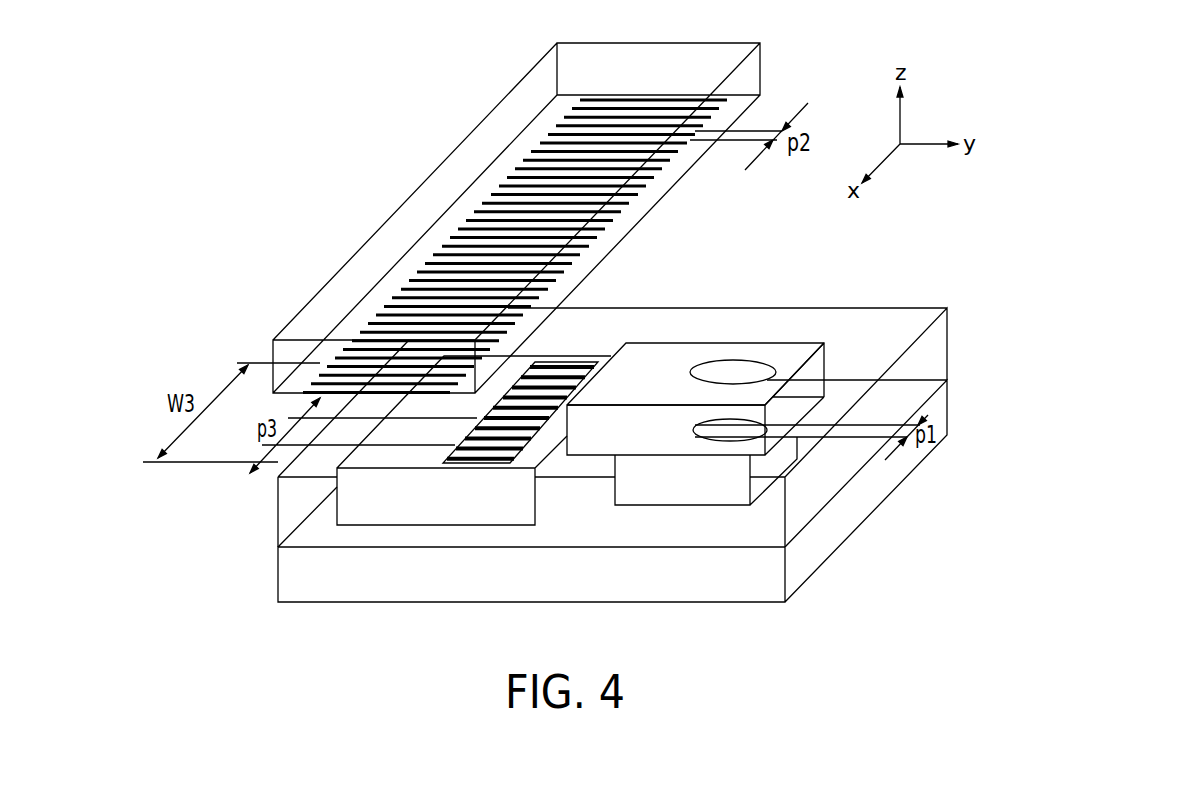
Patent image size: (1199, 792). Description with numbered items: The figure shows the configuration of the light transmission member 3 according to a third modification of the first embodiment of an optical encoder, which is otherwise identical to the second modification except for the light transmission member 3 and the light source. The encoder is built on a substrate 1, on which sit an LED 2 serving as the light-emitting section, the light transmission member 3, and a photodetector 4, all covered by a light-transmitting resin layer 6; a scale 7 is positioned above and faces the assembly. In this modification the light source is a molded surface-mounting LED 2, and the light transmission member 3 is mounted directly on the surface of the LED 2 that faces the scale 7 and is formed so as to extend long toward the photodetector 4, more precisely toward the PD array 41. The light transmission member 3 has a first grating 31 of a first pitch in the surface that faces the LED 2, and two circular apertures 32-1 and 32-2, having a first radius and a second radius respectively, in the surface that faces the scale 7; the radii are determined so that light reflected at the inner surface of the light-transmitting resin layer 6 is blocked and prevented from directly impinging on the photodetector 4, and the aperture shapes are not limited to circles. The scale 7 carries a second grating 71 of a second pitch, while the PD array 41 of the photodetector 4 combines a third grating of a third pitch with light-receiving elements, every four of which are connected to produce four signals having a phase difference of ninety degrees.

The substrate 1 is at (716, 596).
The bare LED 2 is at (790, 463).
The light transmission member 3 is at (767, 355).
The first grating 31 is at (765, 405).
The first aperture 32-1 is at (707, 437).
The second aperture 32-2 is at (700, 363).
The photodetector 4 is at (388, 508).
The PD array 41 is at (482, 465).
The light-transmitting resin layer 6 is at (937, 345).
The scale 7 is at (367, 258).
The second grating 71 is at (357, 332).